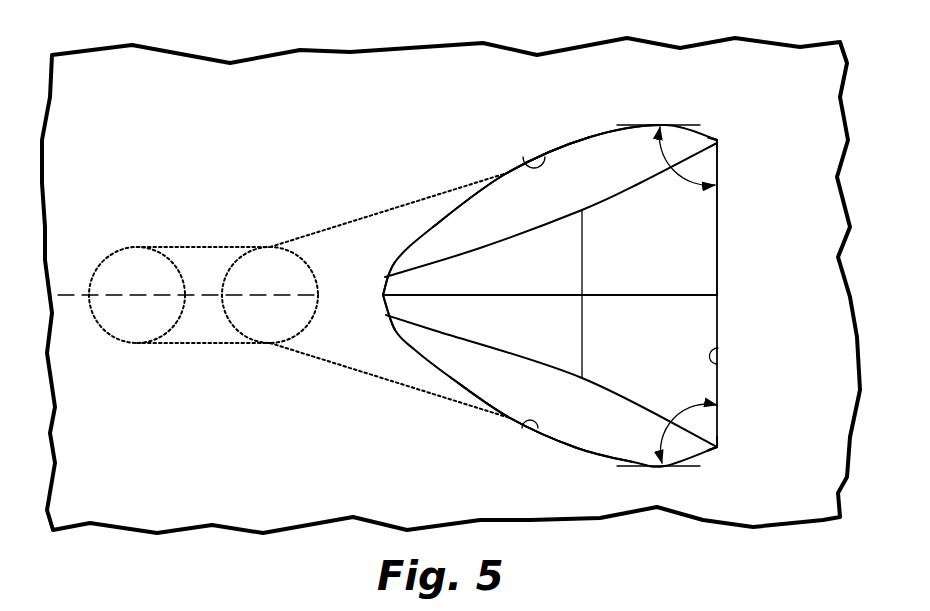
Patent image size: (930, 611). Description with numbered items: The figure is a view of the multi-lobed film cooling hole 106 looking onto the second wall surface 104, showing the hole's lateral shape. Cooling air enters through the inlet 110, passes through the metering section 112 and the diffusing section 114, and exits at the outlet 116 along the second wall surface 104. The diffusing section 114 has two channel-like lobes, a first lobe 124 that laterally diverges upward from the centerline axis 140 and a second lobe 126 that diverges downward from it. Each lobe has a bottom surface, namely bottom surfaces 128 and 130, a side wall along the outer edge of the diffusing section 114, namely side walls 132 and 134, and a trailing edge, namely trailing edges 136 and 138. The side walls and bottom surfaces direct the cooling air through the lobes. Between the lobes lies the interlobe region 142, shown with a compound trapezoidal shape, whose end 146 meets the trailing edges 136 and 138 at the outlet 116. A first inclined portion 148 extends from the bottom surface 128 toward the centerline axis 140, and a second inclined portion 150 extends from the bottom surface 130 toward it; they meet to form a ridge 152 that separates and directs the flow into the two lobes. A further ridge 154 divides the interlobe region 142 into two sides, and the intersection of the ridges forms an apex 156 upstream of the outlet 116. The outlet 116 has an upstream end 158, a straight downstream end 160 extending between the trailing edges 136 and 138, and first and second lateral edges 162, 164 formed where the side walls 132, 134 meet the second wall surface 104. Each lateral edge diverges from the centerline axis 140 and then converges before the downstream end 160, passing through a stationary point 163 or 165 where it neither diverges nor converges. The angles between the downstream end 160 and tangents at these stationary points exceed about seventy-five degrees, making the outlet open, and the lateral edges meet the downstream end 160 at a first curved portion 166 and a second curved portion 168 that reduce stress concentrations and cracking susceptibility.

The second wall surface 104 is at (113, 101).
The cooling hole 106 is at (430, 226).
The inlet 110 is at (128, 328).
The metering section 112 is at (203, 328).
The diffusing section 114 is at (452, 347).
The outlet 116 is at (722, 172).
The first lobe 124 is at (500, 210).
The second lobe 126 is at (502, 378).
The bottom surface 128 is at (590, 193).
The bottom surface 130 is at (617, 430).
The side wall 132 is at (546, 157).
The side wall 134 is at (538, 428).
The trailing edge 136 is at (720, 140).
The trailing edge 138 is at (720, 445).
The centerline axis 140 is at (76, 296).
The interlobe region 142 is at (688, 227).
The end 146 is at (716, 364).
The first inclined portion 148 is at (506, 281).
The second inclined portion 150 is at (502, 329).
The ridge 152 is at (518, 298).
The ridge 154 is at (638, 295).
The apex 156 is at (585, 300).
The upstream end 158 is at (382, 306).
The downstream end 160 is at (720, 310).
The first lateral edge 162 is at (590, 137).
The stationary point 163 is at (658, 125).
The second lateral edge 164 is at (578, 450).
The stationary point 165 is at (665, 466).
The first curved portion 166 is at (719, 134).
The second curved portion 168 is at (721, 451).